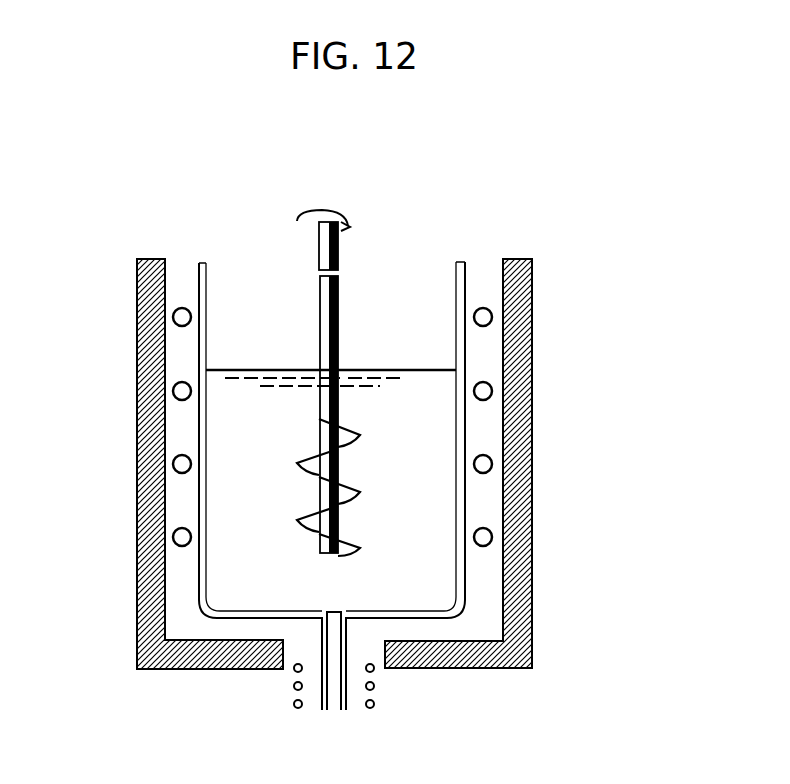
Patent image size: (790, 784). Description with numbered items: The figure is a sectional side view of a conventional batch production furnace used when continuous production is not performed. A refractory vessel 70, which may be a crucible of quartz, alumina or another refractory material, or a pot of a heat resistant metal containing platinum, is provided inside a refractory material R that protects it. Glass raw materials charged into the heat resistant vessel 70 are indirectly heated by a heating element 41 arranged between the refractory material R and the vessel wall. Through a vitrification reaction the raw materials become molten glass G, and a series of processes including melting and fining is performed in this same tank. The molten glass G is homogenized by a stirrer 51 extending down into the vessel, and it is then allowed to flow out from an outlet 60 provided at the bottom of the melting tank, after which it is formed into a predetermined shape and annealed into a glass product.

The refractory material R is at (143, 323).
The molten glass G is at (222, 418).
The heating element 41 is at (182, 540).
The stirrer 51 is at (340, 297).
The outlet 60 is at (375, 711).
The refractory vessel 70 is at (463, 418).